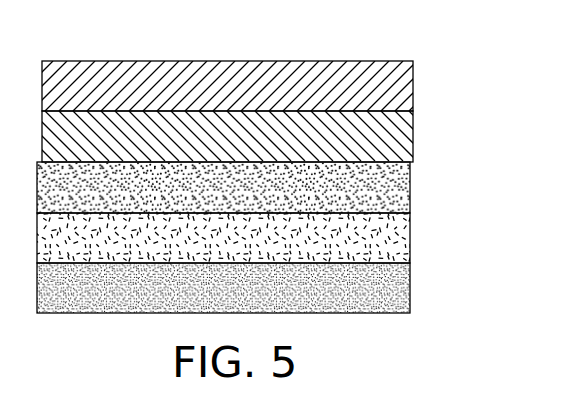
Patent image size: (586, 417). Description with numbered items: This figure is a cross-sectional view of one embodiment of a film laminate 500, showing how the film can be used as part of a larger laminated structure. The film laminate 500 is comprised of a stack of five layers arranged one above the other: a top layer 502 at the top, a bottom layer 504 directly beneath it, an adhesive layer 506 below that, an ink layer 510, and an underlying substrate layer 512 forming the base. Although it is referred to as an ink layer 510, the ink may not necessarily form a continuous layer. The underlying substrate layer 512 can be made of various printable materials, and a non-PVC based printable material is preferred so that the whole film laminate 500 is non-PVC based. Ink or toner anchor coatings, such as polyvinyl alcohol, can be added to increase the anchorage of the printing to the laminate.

The film laminate 500 is at (426, 46).
The top layer 502 is at (404, 97).
The bottom layer 504 is at (404, 133).
The adhesive layer 506 is at (404, 188).
The ink layer 510 is at (404, 233).
The underlying substrate layer 512 is at (404, 288).